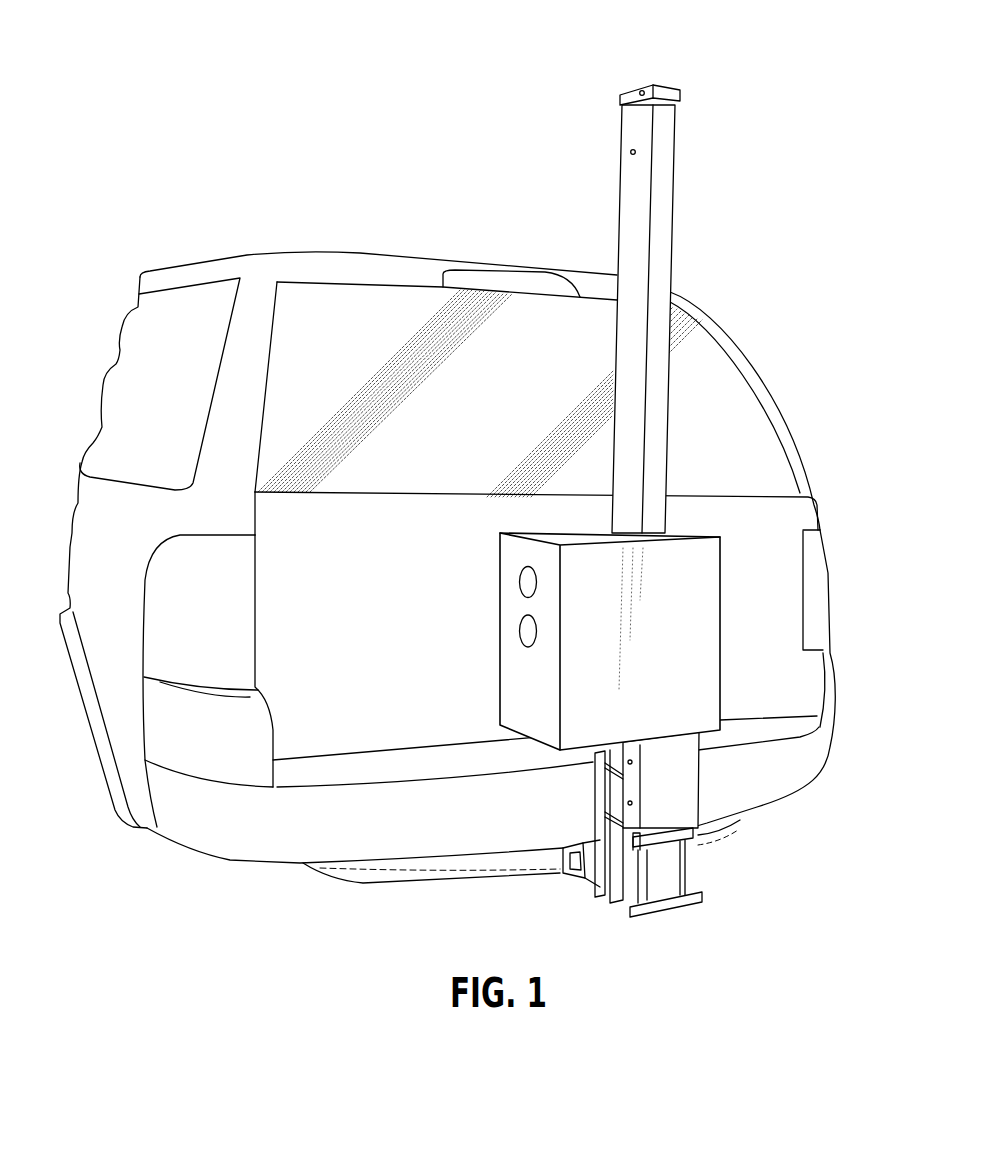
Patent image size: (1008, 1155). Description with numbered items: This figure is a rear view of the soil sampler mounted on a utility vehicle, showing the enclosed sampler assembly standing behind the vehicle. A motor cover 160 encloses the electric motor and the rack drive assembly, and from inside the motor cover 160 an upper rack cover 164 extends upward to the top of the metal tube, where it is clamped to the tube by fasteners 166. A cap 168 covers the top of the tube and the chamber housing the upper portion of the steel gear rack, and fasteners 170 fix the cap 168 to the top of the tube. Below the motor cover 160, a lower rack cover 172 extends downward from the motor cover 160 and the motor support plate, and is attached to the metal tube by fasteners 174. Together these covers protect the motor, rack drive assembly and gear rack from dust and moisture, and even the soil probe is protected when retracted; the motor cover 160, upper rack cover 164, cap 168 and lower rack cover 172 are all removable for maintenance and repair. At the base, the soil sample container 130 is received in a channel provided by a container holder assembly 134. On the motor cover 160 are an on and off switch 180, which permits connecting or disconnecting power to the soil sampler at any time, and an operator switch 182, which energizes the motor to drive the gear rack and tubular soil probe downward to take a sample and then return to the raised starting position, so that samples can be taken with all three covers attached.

The soil sample container 130 is at (673, 873).
The container holder assembly 134 is at (668, 905).
The motor cover 160 is at (598, 641).
The upper rack cover 164 is at (668, 124).
The fasteners 166 is at (629, 152).
The cap 168 is at (667, 90).
The fasteners 170 is at (638, 92).
The lower rack cover 172 is at (690, 786).
The fasteners 174 is at (627, 803).
The on and off switch 180 is at (521, 583).
The operator switch 182 is at (521, 635).